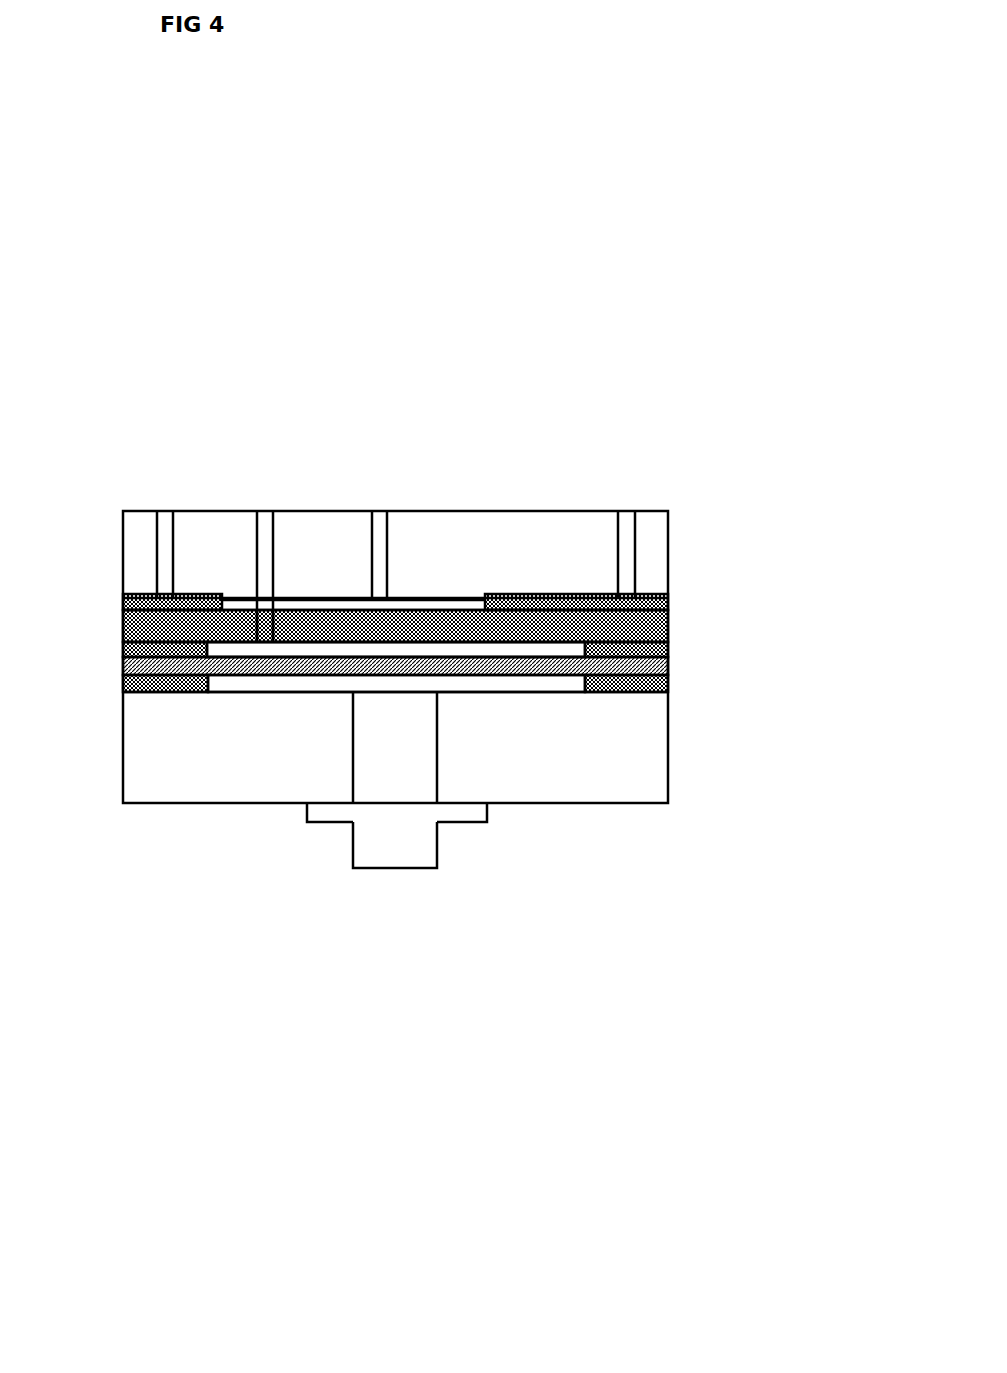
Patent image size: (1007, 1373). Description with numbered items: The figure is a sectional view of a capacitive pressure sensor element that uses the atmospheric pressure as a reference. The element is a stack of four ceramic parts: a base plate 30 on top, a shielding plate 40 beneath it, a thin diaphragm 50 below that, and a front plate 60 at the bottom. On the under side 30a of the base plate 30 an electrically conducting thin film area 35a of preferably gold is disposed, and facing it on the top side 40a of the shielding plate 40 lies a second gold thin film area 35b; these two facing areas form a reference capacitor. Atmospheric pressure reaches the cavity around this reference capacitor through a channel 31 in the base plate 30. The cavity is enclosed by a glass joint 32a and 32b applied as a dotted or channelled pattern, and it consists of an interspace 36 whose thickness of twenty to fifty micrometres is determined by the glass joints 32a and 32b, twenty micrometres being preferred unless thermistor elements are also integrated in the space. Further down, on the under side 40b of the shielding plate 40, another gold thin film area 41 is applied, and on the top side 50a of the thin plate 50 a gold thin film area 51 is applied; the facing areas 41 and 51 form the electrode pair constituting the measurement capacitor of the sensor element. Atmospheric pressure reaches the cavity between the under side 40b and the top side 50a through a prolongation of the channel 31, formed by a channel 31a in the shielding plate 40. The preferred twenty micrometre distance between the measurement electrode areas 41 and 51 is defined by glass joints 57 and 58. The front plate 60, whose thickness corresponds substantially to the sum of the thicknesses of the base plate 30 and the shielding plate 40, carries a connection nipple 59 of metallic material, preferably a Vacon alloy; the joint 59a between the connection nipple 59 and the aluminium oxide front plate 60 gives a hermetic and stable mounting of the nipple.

The base plate 30 is at (460, 527).
The under side of the base plate 30a is at (463, 598).
The channel 31 is at (265, 518).
The channel in the shielding plate 31a is at (265, 640).
The glass joint 32a is at (668, 598).
The glass joint 32b is at (123, 600).
The electrically conducting thin film area 35a is at (417, 598).
The electrically conducting thin film area 35b is at (332, 612).
The interspace 36 is at (463, 598).
The shielding plate 40 is at (557, 622).
The top side of the shielding plate 40a is at (245, 613).
The under side of the shielding plate 40b is at (567, 643).
The electrically conducting thin film area 41 is at (474, 660).
The thin diaphragm 50 is at (523, 675).
The top side of the thin plate 50a is at (547, 643).
The electrically conducting thin film area 51 is at (432, 642).
The glass joint 57 is at (663, 652).
The glass joint 58 is at (192, 650).
The connection nipple 59 is at (410, 868).
The joint 59a is at (335, 803).
The front plate 60 is at (290, 787).